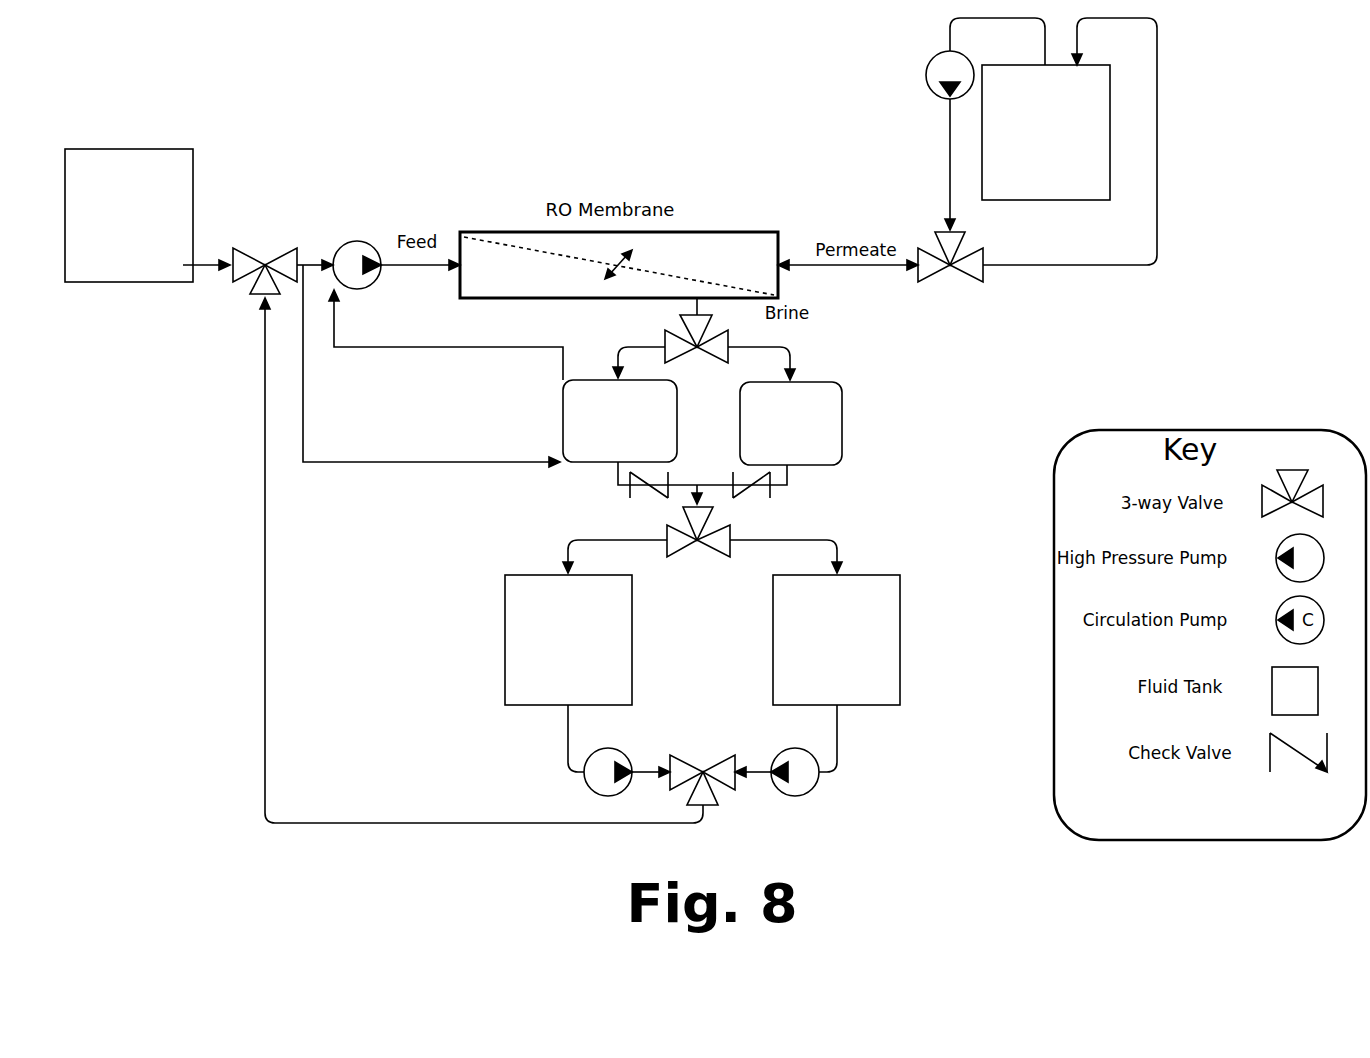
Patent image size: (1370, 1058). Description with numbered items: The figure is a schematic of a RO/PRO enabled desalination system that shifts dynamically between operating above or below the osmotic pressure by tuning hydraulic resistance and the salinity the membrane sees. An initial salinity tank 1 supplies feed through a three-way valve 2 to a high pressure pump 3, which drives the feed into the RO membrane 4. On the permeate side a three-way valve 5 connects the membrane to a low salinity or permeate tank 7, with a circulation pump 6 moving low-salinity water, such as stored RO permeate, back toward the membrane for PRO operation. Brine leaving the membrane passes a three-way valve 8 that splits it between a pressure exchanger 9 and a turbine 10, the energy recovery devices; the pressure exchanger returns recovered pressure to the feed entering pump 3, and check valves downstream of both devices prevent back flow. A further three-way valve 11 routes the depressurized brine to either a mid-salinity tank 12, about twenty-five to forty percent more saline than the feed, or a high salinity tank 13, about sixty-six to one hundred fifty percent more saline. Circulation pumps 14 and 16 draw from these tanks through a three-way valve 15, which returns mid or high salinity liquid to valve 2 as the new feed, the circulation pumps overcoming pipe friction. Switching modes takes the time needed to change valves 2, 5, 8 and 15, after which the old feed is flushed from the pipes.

The initial salinity fluid tank 1 is at (129, 215).
The valve 2 is at (265, 253).
The high pressure pump 3 is at (357, 249).
The RO membrane 4 is at (619, 246).
The valve 5 is at (940, 244).
The circulation pump 6 is at (955, 61).
The low salinity or permeate fluid tank 7 is at (1046, 132).
The valve 8 is at (702, 333).
The pressure exchanger 9 is at (624, 417).
The turbine 10 is at (793, 421).
The 3-way valve 11 is at (698, 545).
The mid-salinity fluid tank 12 is at (568, 640).
The high salinity fluid tank 13 is at (836, 640).
The circulation pump 14 is at (613, 755).
The valve 15 is at (702, 760).
The circulation pump 16 is at (799, 755).